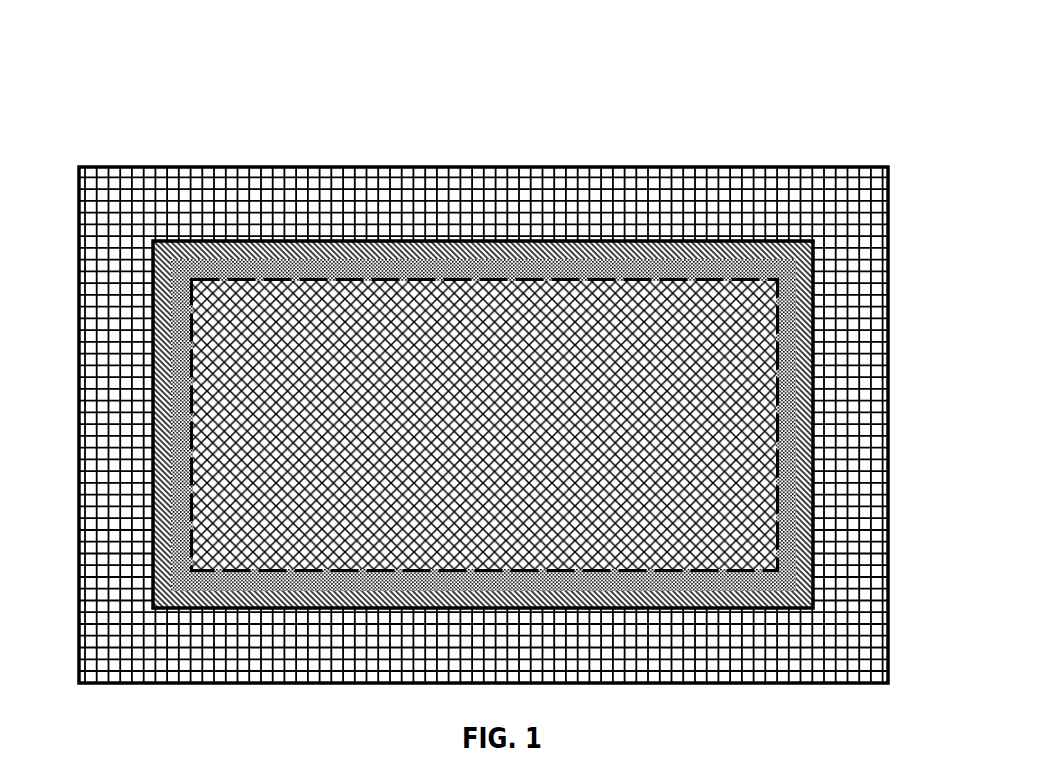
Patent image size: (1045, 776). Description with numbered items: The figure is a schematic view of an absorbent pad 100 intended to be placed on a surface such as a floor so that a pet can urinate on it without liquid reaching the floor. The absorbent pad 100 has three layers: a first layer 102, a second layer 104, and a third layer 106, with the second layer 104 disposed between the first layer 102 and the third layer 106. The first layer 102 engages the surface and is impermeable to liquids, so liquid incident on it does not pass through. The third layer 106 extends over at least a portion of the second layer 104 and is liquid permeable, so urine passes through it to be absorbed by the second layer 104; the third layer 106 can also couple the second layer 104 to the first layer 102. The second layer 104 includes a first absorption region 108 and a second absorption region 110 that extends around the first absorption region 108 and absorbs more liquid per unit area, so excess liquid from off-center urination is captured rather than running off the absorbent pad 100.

The absorbent pad 100 is at (68, 54).
The first layer 102 is at (362, 190).
The second layer 104 is at (785, 288).
The third layer 106 is at (593, 253).
The first absorption region 108 is at (771, 417).
The second absorption region 110 is at (805, 472).